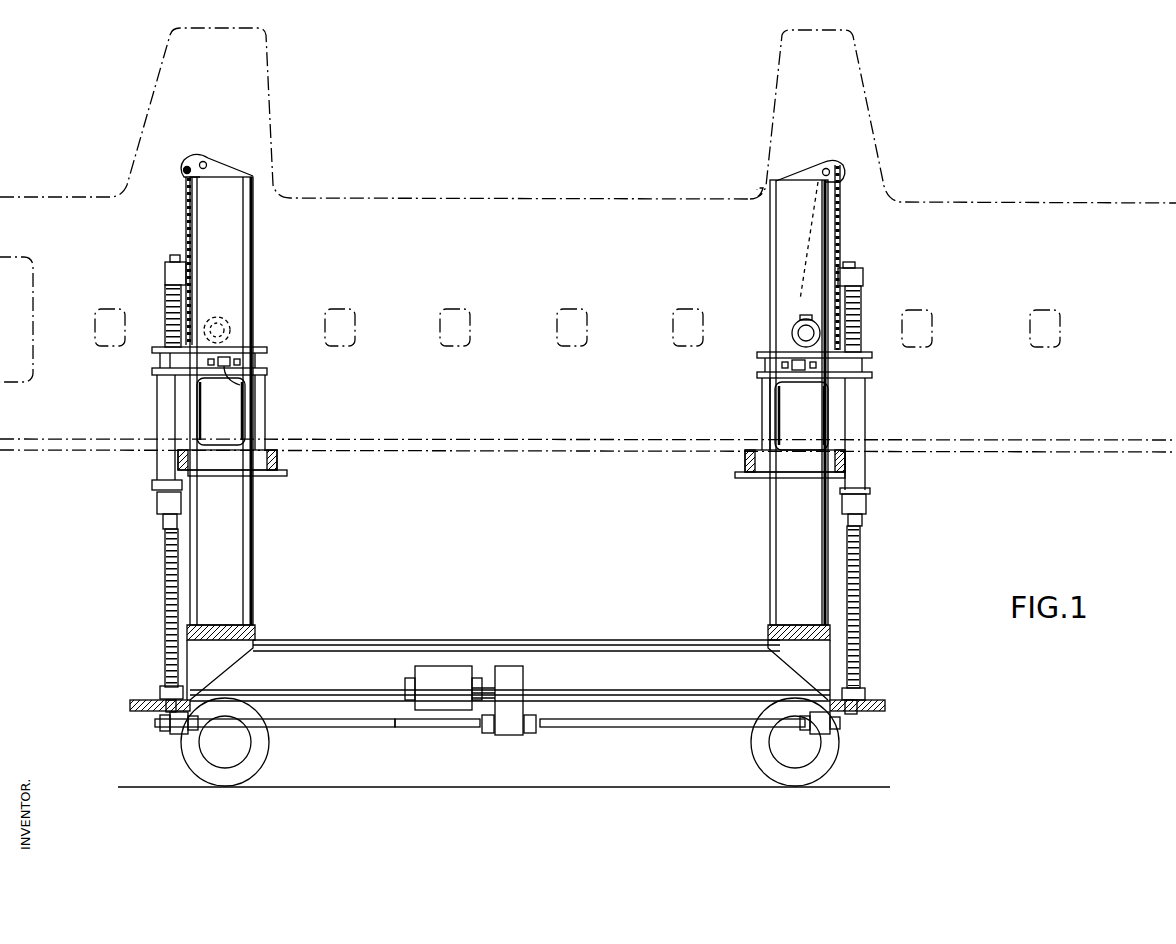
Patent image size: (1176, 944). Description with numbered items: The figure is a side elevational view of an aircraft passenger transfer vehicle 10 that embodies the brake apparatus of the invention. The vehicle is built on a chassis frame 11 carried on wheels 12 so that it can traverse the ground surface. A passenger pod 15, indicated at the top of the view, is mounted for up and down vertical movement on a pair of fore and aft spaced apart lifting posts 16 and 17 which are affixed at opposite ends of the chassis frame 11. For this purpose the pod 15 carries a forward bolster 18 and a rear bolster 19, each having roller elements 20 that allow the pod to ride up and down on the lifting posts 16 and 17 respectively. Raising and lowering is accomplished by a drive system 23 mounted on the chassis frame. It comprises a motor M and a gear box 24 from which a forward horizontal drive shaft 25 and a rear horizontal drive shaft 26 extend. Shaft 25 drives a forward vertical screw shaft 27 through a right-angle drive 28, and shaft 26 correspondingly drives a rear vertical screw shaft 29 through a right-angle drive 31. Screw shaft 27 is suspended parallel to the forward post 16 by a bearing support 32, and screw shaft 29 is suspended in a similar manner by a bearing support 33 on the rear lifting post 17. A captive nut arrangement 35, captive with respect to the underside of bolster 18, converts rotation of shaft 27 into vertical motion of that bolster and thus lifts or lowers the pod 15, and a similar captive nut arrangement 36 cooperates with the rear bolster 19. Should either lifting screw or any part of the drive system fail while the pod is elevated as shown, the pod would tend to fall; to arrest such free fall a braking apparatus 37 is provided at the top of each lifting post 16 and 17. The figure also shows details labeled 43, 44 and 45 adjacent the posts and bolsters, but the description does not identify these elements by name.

The passenger transfer vehicle 10 is at (100, 472).
The chassis frame 11 is at (568, 640).
The wheels 12 is at (835, 776).
The passenger pod 15 is at (500, 197).
The forward lifting post 16 is at (256, 540).
The rear lifting post 17 is at (770, 537).
The forward bolster 18 is at (287, 475).
The rear bolster 19 is at (735, 478).
The roller elements 20 is at (247, 383).
The drive system 23 is at (300, 728).
The gear box 24 is at (518, 700).
The forward drive shaft 25 is at (400, 728).
The rear drive shaft 26 is at (675, 728).
The forward vertical screw shaft 27 is at (165, 611).
The right-angle drive 28 is at (166, 732).
The rear vertical screw shaft 29 is at (860, 638).
The right-angle drive 31 is at (850, 735).
The bearing support 32 is at (165, 274).
The bearing support 33 is at (863, 278).
The captive nut arrangement 35 is at (157, 498).
The captive nut arrangement 36 is at (866, 503).
The braking apparatus 37 is at (213, 162).
The rack 43 is at (186, 211).
The platform plate 44 is at (180, 350).
The roller 45 is at (227, 328).